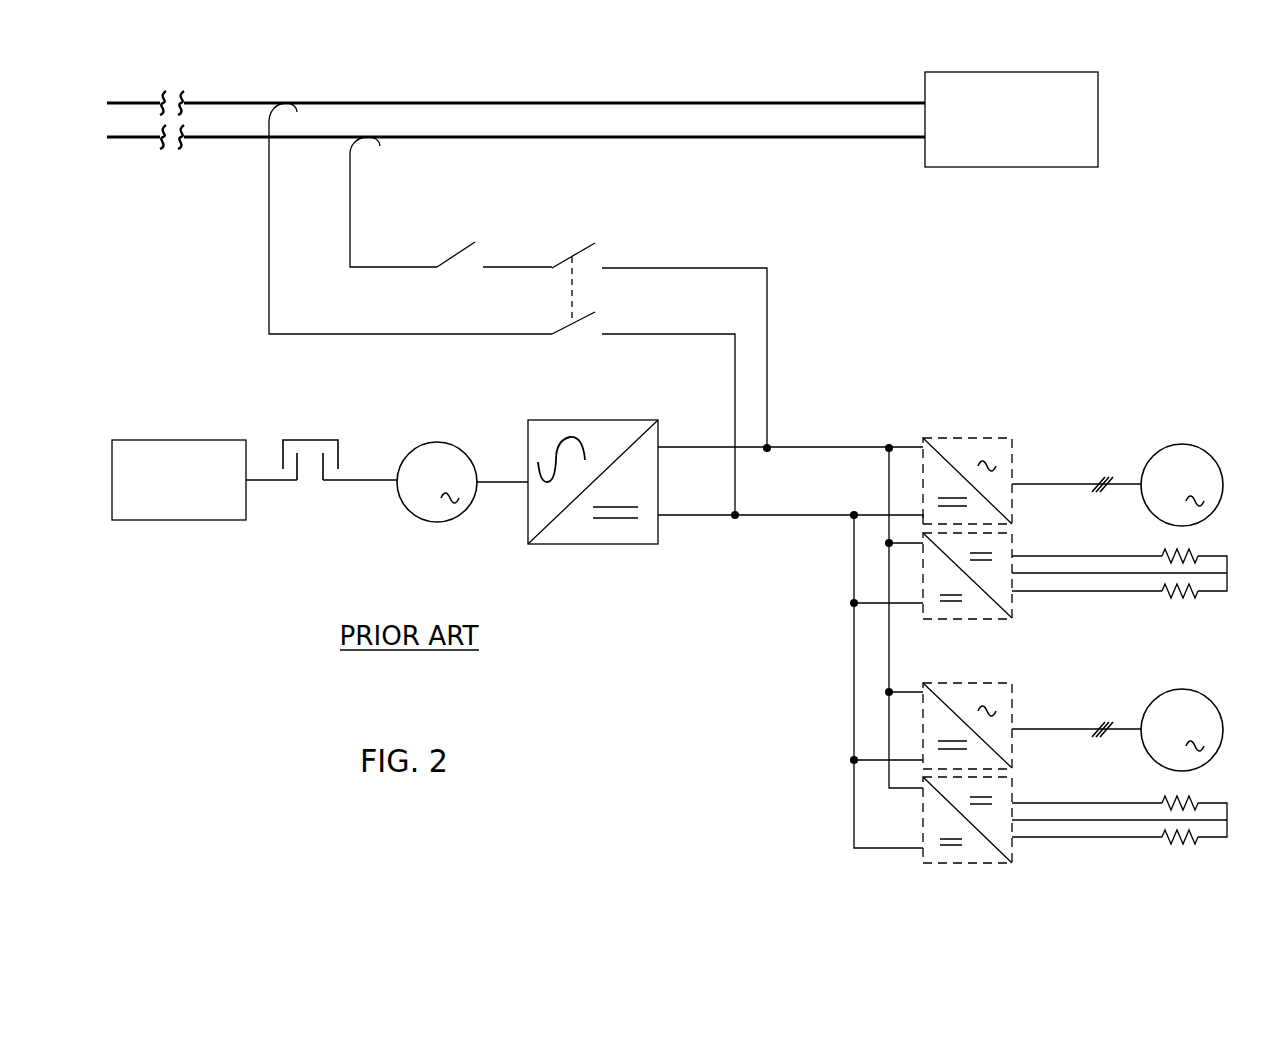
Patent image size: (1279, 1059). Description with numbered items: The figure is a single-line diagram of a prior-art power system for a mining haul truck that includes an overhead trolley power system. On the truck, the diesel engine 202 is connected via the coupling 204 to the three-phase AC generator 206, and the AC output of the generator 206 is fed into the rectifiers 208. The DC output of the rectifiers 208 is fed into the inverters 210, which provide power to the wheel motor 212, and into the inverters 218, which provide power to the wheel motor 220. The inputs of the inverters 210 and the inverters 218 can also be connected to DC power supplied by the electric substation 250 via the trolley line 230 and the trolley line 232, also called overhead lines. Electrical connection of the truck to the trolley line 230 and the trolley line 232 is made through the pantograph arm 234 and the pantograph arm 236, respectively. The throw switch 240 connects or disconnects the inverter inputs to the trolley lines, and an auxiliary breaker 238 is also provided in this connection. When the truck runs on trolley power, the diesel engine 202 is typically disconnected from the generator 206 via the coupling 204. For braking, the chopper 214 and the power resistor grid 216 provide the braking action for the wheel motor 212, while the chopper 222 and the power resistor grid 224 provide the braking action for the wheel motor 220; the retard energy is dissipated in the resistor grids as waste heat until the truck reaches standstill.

The diesel engine 202 is at (180, 440).
The coupling 204 is at (314, 440).
The 3-phase AC generator 206 is at (437, 442).
The rectifiers 208 is at (595, 420).
The inverters 210 is at (964, 438).
The wheel motor 212 is at (1183, 444).
The chopper 214 is at (1012, 543).
The power resistor grid 216 is at (1180, 602).
The inverters 218 is at (964, 683).
The wheel motor 220 is at (1183, 689).
The chopper 222 is at (1012, 789).
The power resistor grid 224 is at (1177, 847).
The trolley line 230 is at (570, 103).
The trolley line 232 is at (590, 138).
The pantograph arm 234 is at (266, 197).
The pantograph arm 236 is at (354, 197).
The auxiliary breaker 238 is at (602, 345).
The throw switch 240 is at (643, 386).
The electric substation 250 is at (1013, 72).